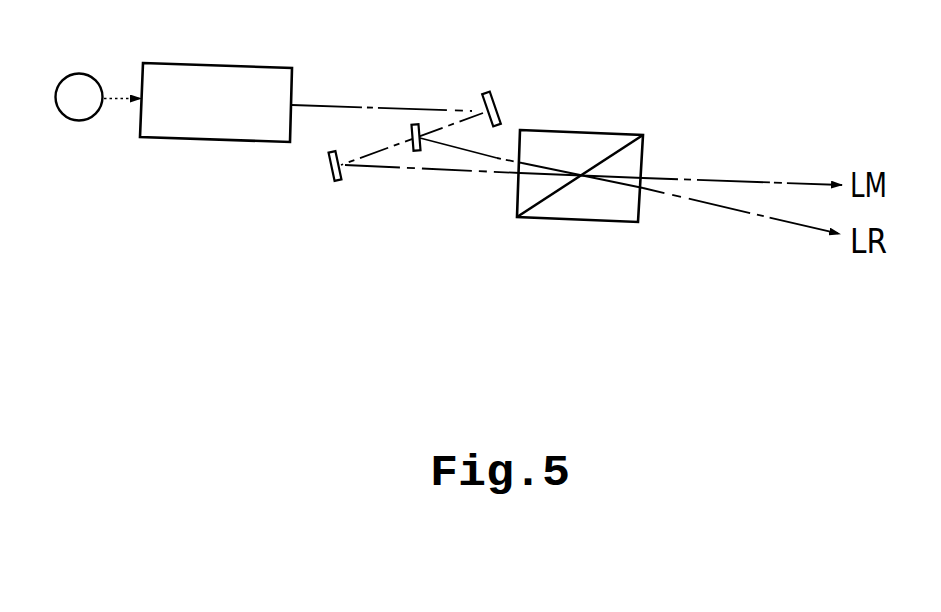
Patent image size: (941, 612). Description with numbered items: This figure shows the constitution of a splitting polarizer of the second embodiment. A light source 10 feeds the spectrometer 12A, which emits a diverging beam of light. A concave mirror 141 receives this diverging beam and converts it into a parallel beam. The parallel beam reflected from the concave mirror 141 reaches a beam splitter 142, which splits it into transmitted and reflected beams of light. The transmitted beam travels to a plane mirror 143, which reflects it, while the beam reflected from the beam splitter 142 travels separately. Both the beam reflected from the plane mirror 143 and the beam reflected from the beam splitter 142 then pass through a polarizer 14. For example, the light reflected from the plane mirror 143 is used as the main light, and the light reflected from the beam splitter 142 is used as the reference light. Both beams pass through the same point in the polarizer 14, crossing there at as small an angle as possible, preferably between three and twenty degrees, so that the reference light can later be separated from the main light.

The light source (lamp) 10 is at (88, 75).
The spectrometer 12A is at (243, 63).
The concave mirror 141 is at (497, 98).
The beam splitter 142 is at (410, 130).
The plane mirror 143 is at (331, 158).
The polarizer 14 is at (597, 222).